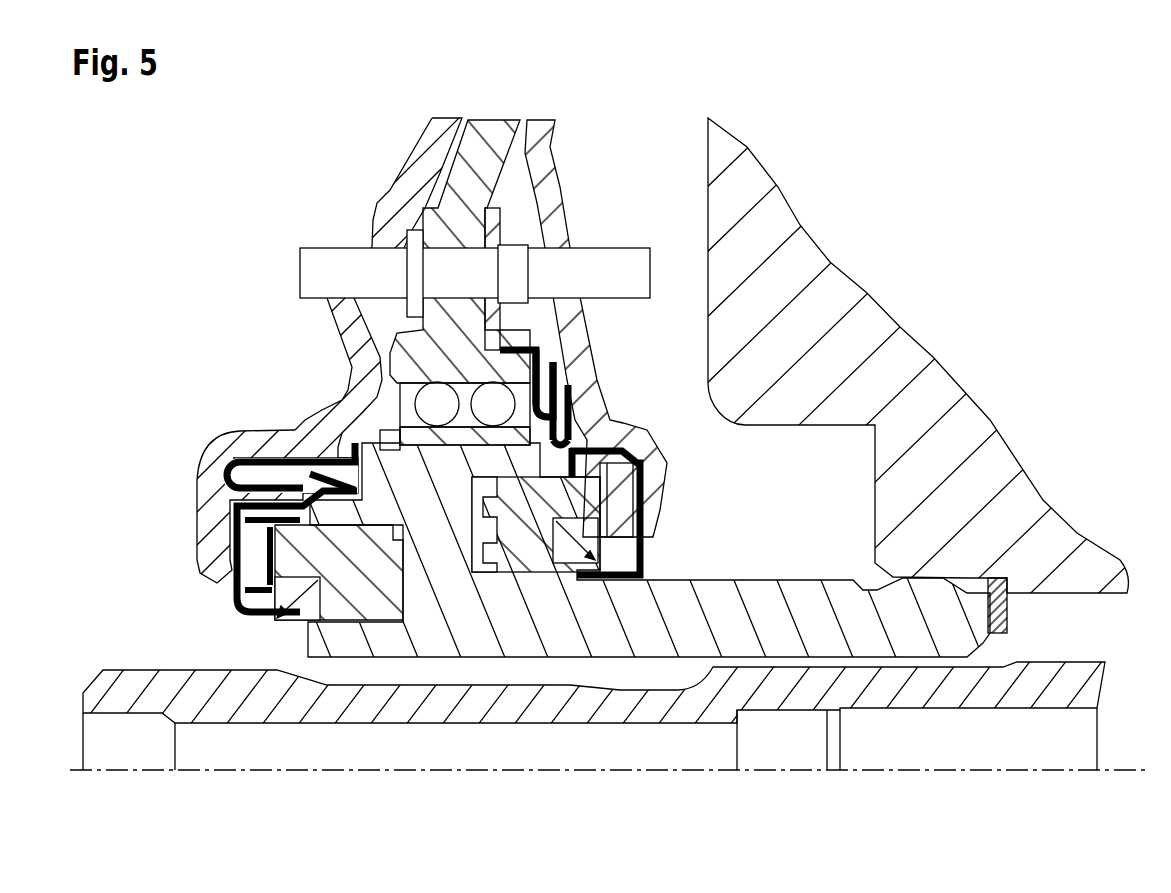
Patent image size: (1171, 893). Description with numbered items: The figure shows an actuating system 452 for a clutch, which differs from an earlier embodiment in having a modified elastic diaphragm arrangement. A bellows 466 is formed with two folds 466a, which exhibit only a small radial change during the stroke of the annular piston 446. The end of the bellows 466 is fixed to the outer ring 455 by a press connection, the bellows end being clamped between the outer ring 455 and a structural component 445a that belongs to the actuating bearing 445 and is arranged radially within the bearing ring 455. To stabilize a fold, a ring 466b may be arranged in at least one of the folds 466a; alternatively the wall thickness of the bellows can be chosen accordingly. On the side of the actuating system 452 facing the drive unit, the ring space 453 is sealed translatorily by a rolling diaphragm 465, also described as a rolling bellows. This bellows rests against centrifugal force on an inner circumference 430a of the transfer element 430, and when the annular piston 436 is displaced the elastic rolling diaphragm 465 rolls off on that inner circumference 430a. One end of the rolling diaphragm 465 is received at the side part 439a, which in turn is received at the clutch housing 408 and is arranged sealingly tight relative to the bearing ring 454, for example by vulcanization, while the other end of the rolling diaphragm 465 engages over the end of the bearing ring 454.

The clutch housing 408 is at (487, 143).
The transfer element 430 is at (210, 503).
The inner circumference 430a is at (253, 432).
The annular piston 436 is at (337, 598).
The side part 439a is at (362, 410).
The actuating bearing 445 is at (668, 507).
The structural component 445a is at (648, 456).
The annular piston 446 is at (542, 553).
The actuating system 452 is at (1036, 170).
The ring space 453 is at (334, 315).
The bearing ring 454 is at (230, 598).
The outer ring 455 is at (607, 445).
The rolling diaphragm 465 is at (290, 482).
The bellows 466 is at (558, 395).
The folds 466a is at (556, 470).
The ring 466b is at (587, 417).